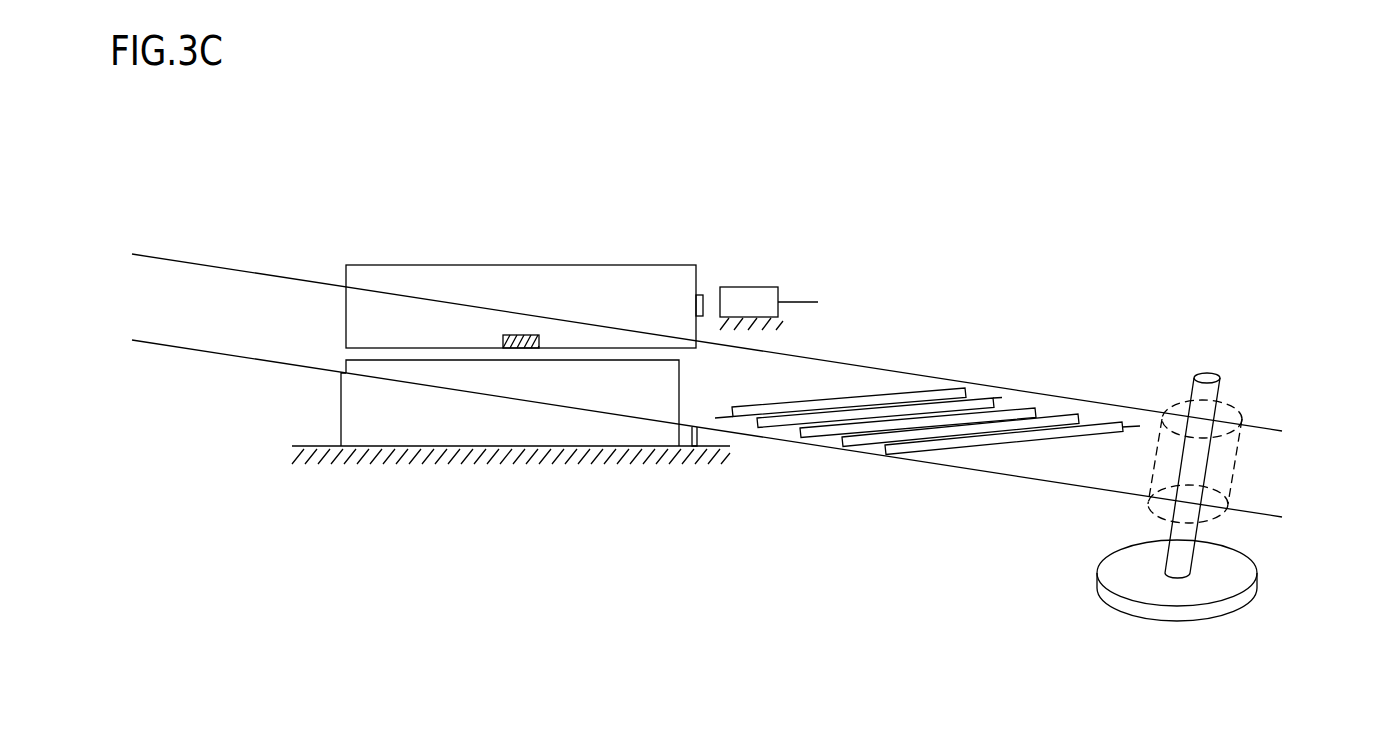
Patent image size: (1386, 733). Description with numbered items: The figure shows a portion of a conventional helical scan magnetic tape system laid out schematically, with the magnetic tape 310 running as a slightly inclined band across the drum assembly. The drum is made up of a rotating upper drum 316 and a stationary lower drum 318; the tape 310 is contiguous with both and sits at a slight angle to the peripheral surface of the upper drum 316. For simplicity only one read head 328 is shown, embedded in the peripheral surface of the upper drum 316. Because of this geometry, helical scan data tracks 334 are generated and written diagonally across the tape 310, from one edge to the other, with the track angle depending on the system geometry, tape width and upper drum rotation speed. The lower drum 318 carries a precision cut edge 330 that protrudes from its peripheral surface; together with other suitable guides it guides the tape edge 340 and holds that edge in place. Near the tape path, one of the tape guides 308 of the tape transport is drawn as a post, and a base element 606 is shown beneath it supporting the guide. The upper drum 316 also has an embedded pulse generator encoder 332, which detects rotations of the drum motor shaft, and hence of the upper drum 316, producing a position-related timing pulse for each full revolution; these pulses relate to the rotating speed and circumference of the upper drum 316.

The magnetic tape 310 is at (227, 254).
The upper drum 316 is at (495, 250).
The read head 328 is at (535, 321).
The pulse generator (PG) encoder 332 is at (772, 256).
The helical scan data tracks 334 is at (880, 384).
The tape guide 308 is at (1247, 389).
The tape edge 340 is at (383, 393).
The lower drum 318 is at (612, 441).
The precision cut edge 330 is at (706, 442).
The disk / base 606 is at (1282, 615).